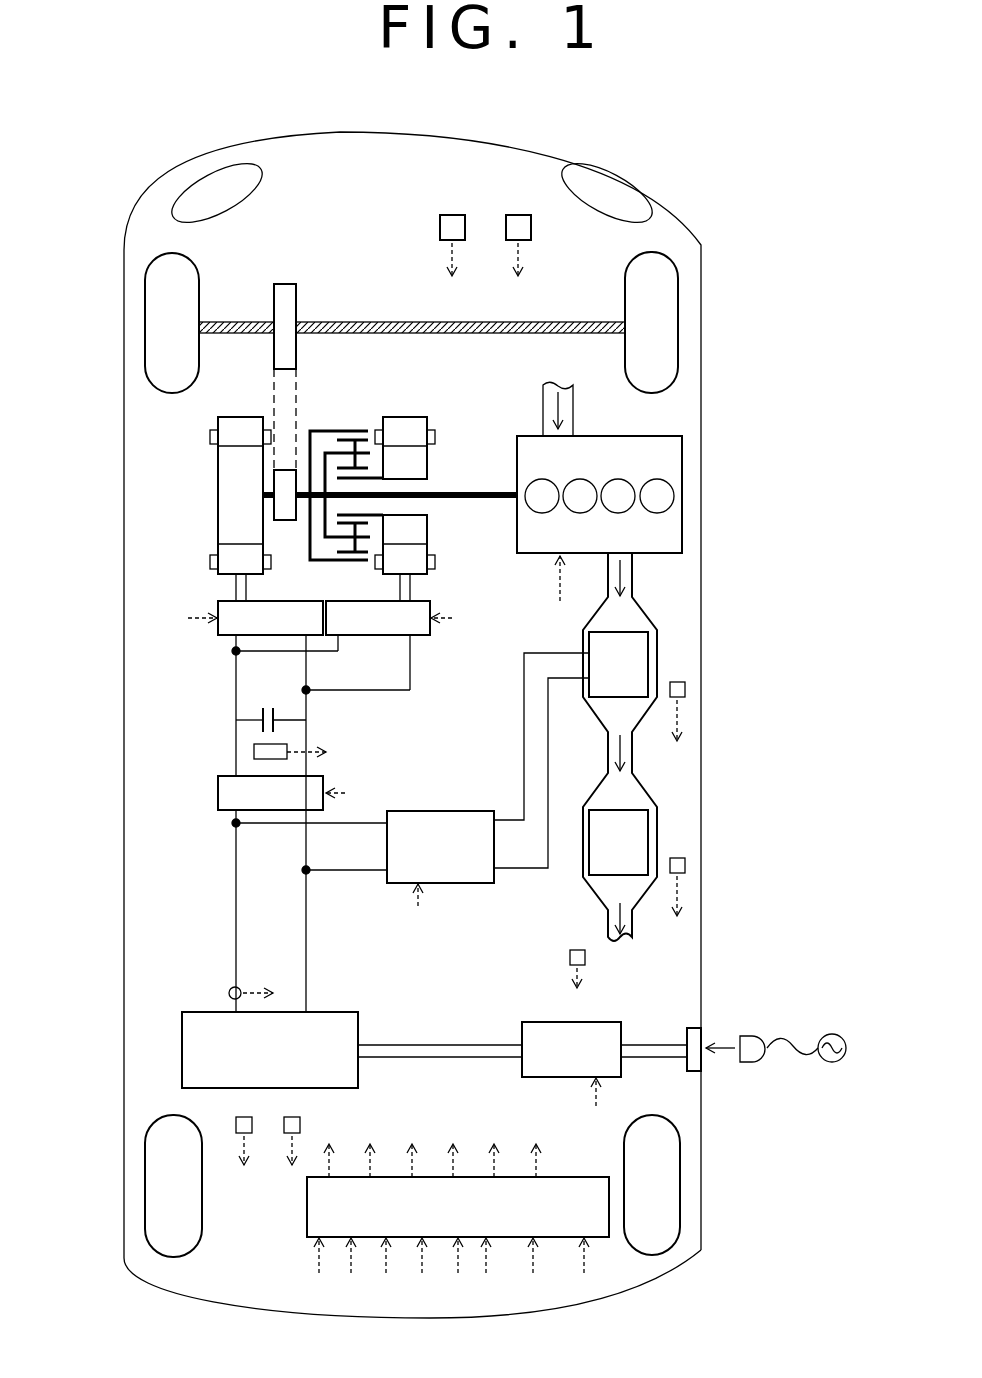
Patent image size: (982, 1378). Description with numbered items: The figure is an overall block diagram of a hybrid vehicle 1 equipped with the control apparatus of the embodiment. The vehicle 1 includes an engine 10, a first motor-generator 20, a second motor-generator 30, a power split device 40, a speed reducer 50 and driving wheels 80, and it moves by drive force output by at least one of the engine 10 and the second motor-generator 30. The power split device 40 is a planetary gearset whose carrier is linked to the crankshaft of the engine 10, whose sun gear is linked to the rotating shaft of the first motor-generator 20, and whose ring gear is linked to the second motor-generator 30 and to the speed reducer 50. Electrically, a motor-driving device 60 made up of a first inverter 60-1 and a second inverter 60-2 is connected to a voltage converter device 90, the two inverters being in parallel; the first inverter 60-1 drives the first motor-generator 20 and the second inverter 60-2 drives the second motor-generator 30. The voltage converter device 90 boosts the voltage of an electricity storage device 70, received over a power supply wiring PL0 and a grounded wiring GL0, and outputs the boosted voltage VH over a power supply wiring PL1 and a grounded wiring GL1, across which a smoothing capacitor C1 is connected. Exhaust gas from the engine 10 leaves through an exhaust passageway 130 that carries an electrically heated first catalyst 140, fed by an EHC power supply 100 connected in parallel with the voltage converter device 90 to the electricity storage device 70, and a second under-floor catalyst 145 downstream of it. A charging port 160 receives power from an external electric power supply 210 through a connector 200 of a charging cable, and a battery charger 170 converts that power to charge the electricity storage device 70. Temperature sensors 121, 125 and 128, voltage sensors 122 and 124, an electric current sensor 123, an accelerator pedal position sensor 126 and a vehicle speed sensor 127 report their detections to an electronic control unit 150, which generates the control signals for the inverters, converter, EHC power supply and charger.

The vehicle 1 is at (200, 132).
The engine 10 is at (682, 503).
The first motor-generator 20 is at (403, 414).
The second motor-generator 30 is at (238, 414).
The power split device 40 is at (343, 428).
The speed reducer 50 is at (290, 278).
The motor-driving device 60 is at (277, 640).
The first inverter 60-1 is at (415, 597).
The second inverter 60-2 is at (268, 596).
The electricity storage device 70 is at (182, 1048).
The driving wheels 80 is at (701, 325).
The voltage converter device 90 is at (218, 793).
The EHC power supply 100 is at (420, 810).
The temperature sensor 121 is at (236, 1117).
The voltage sensor 122 is at (298, 1115).
The electric current sensor 123 is at (228, 993).
The voltage sensor 124 is at (254, 750).
The temperature sensor 125 is at (685, 688).
The accelerator pedal position sensor 126 is at (450, 213).
The vehicle speed sensor 127 is at (517, 213).
The temperature sensor 128 is at (685, 865).
The exhaust passageway 130 is at (632, 608).
The first catalyst (EHC) 140 is at (657, 655).
The second catalyst (UFC) 145 is at (650, 832).
The electronic control unit 150 is at (307, 1205).
The charging port 160 is at (692, 1022).
The battery charger 170 is at (603, 1022).
The connector 200 is at (752, 1063).
The external electric power supply 210 is at (832, 1063).
The smoothing capacitor C1 is at (264, 704).
The power supply wiring PL1 is at (236, 694).
The grounded wiring GL1 is at (306, 705).
The power supply wiring PL0 is at (236, 875).
The grounded wiring GL0 is at (306, 912).